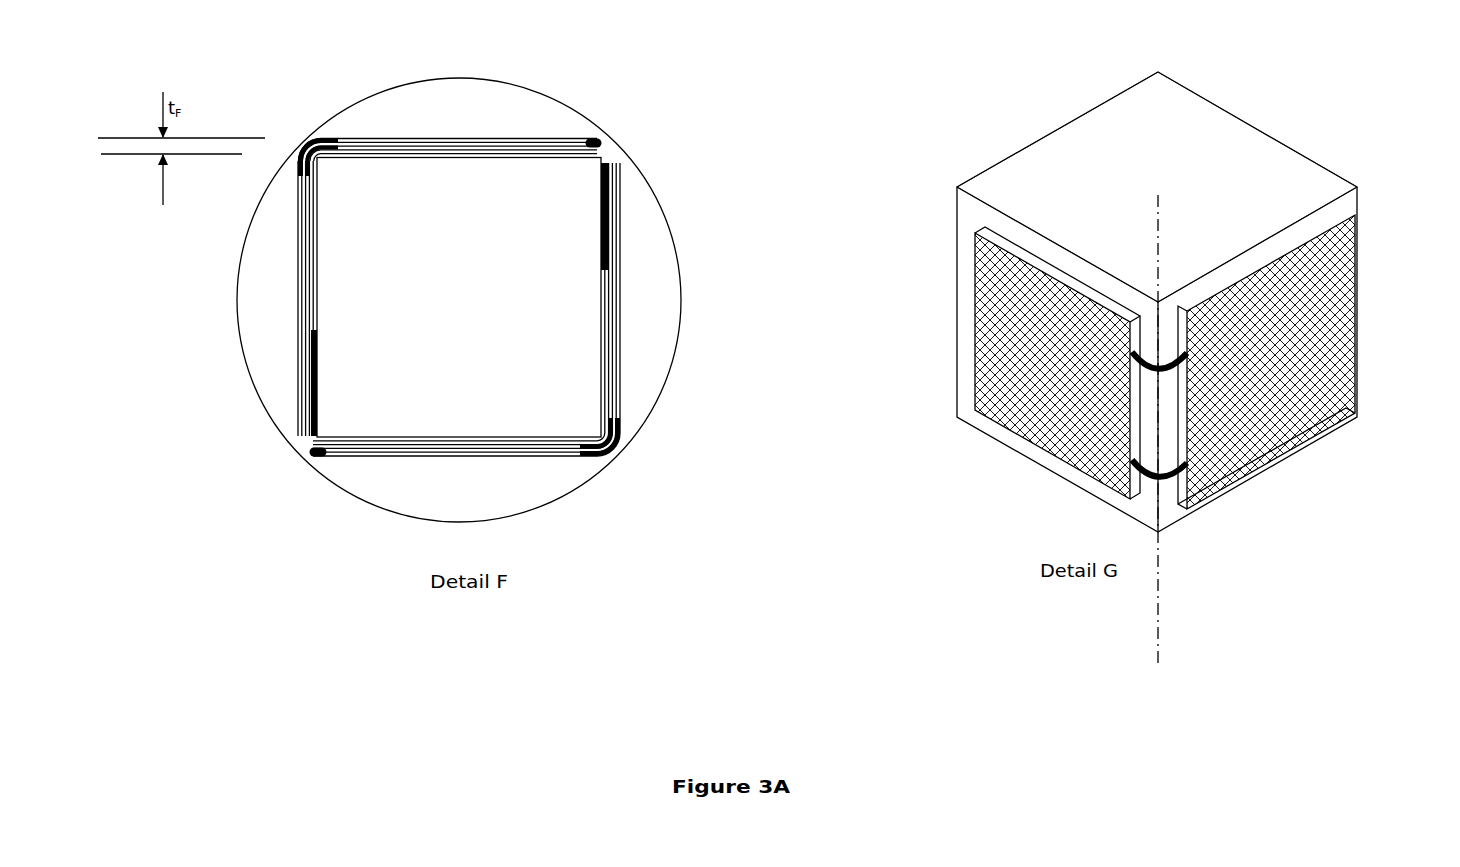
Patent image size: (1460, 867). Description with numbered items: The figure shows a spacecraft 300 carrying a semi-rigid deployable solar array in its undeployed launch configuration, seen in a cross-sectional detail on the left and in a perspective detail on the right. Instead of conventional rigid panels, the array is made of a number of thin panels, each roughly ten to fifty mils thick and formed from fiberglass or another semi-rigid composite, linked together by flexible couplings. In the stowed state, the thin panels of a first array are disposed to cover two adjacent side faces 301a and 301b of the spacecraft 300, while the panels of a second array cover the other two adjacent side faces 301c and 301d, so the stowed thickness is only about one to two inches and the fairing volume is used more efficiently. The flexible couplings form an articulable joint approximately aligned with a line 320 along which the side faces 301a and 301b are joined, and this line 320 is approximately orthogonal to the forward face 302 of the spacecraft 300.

The spacecraft 300 is at (473, 98).
The forward face 302 is at (1288, 104).
The side face 301a is at (603, 302).
The side face 301b is at (534, 458).
The side face 301c is at (317, 247).
The side face 301d is at (363, 155).
The line 320 is at (1160, 578).